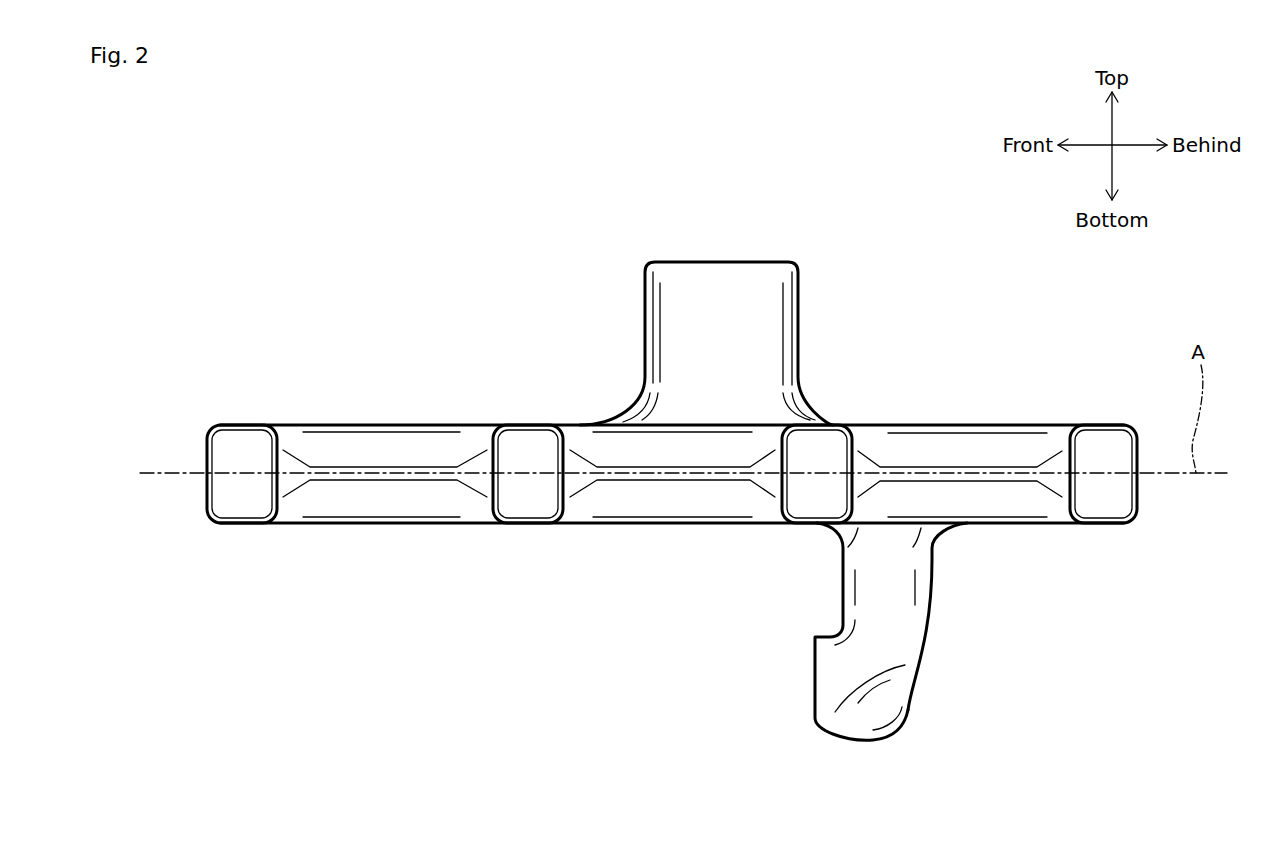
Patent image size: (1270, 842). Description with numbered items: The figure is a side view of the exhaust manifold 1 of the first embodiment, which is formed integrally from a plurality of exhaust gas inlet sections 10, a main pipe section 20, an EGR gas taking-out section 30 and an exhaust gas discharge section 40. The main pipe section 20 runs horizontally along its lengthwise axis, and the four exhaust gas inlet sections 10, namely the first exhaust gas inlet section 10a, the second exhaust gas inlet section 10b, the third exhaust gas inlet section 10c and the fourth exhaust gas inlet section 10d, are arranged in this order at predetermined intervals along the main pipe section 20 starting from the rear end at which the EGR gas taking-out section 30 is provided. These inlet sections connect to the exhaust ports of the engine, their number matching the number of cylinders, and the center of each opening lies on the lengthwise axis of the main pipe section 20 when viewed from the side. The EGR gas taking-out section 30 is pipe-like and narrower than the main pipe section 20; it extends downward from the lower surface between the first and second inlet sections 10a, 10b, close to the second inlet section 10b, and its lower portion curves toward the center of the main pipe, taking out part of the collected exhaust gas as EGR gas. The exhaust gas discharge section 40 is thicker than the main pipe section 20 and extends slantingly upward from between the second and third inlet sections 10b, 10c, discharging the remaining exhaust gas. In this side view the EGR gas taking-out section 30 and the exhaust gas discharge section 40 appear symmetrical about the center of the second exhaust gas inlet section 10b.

The exhaust manifold 1 is at (493, 230).
The exhaust gas inlet sections 10 is at (1147, 532).
The first exhaust gas inlet section 10a is at (1067, 518).
The second exhaust gas inlet section 10b is at (785, 513).
The third exhaust gas inlet section 10c is at (495, 510).
The fourth exhaust gas inlet section 10d is at (205, 500).
The main pipe section 20 is at (410, 398).
The EGR gas taking-out section 30 is at (903, 687).
The exhaust gas discharge section 40 is at (738, 283).